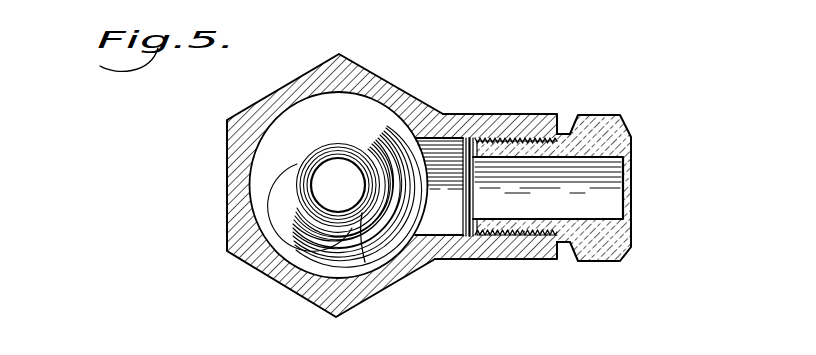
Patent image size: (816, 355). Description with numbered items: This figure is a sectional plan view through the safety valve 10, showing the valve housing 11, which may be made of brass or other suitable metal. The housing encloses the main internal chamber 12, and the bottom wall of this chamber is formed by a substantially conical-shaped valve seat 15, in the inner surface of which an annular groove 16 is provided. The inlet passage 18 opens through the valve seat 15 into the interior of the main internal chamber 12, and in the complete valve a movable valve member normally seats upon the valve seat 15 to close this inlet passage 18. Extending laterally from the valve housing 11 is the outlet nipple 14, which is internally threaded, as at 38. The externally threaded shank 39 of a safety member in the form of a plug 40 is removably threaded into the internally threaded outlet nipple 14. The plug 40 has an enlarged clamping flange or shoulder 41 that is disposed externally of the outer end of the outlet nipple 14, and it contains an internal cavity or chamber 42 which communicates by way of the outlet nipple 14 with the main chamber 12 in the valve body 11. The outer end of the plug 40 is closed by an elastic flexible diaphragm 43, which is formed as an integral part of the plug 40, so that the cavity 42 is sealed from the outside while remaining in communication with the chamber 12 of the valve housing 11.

The safety valve 10 is at (307, 304).
The valve housing 11 is at (450, 262).
The main internal chamber 12 is at (292, 243).
The outlet nipple 14 is at (523, 247).
The valve seat 15 is at (243, 254).
The annular groove 16 is at (367, 272).
The inlet passage 18 is at (342, 163).
The internal threads 38 is at (485, 238).
The externally threaded shank 39 is at (548, 211).
The plug 40 is at (600, 262).
The clamping flange 41 is at (613, 132).
The internal cavity 42 is at (597, 219).
The elastic flexible diaphragm 43 is at (625, 187).